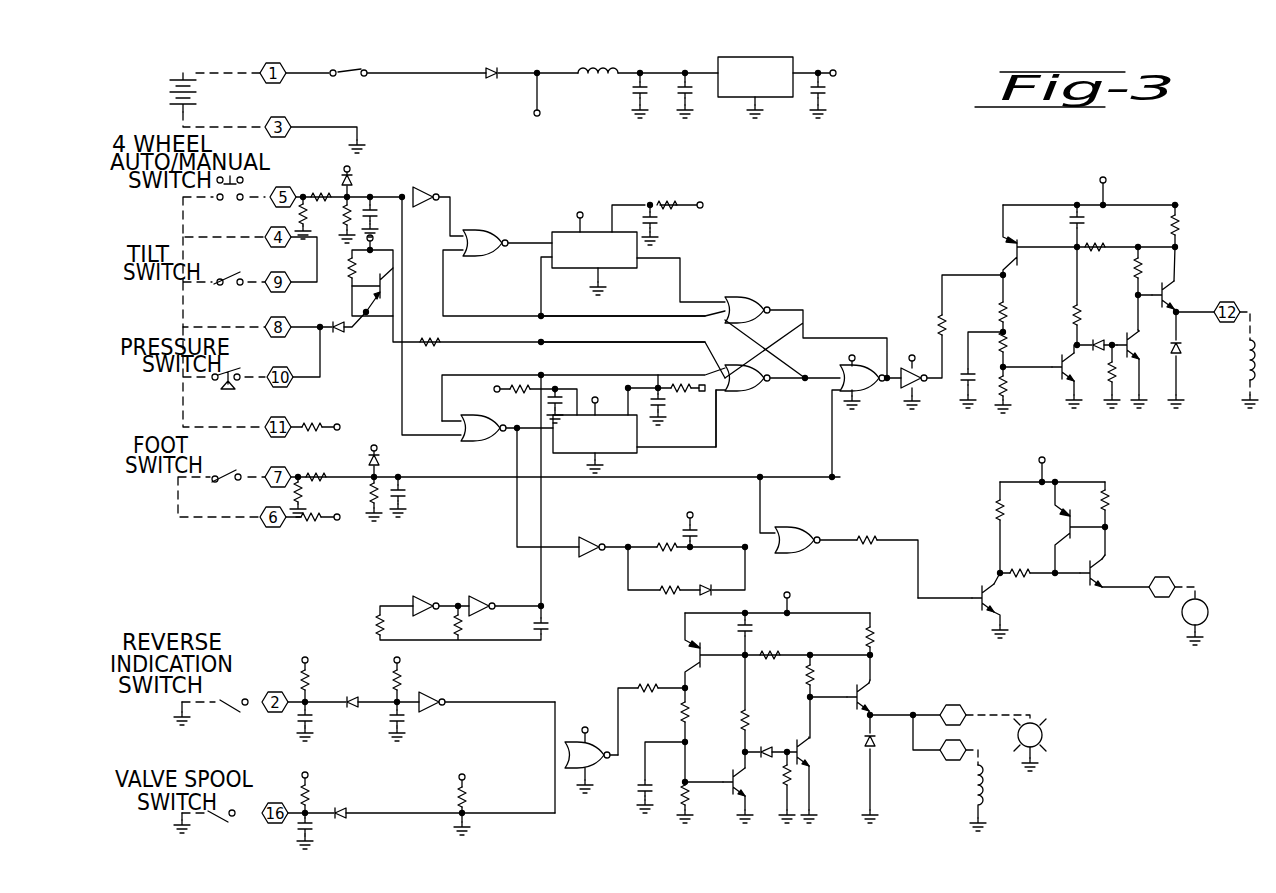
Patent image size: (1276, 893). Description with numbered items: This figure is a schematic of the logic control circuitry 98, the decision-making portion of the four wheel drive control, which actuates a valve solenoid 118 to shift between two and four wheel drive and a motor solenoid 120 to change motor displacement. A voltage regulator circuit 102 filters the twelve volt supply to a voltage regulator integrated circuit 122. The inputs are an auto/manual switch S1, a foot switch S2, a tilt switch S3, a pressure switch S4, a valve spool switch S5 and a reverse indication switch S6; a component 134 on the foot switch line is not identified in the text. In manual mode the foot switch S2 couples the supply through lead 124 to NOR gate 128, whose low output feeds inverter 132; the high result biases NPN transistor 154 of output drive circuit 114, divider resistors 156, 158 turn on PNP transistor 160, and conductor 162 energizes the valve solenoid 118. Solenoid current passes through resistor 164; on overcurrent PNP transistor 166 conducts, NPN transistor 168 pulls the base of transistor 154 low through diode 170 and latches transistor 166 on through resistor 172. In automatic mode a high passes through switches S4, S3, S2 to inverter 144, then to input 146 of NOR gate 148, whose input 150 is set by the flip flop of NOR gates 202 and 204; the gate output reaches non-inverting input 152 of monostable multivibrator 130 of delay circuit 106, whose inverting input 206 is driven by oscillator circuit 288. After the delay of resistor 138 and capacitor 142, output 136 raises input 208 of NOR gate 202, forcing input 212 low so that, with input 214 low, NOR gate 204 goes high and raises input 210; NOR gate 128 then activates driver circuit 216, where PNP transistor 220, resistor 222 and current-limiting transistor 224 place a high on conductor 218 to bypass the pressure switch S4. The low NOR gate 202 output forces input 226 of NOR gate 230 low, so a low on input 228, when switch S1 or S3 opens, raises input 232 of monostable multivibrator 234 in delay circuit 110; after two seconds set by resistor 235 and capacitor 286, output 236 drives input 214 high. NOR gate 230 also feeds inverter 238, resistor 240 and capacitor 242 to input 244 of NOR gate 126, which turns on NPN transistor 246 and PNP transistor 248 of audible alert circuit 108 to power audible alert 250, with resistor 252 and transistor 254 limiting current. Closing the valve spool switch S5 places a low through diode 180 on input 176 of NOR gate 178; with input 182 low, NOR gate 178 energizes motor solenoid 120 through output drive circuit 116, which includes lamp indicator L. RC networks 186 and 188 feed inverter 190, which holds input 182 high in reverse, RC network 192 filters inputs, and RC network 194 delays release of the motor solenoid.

The logic control circuitry 98 is at (121, 94).
The voltage regulator circuit 102 is at (735, 134).
The pressure delay two-to-four wheel shift circuit 106 is at (647, 296).
The audible alert circuit 108 is at (972, 508).
The delay four-to-two wheel shift circuit 110 is at (715, 472).
The output drive circuit 114 is at (958, 244).
The output drive circuit 116 is at (653, 648).
The valve solenoid 118 is at (1248, 352).
The motor solenoid 120 is at (1002, 790).
The voltage regulator integrated circuit 122 is at (795, 62).
The lead 124 is at (450, 480).
The NOR gate 126 is at (790, 527).
The NOR gate 128 is at (868, 392).
The monostable multivibrator 130 is at (572, 232).
The inverter 132 is at (940, 345).
The protection diode 134 is at (374, 490).
The output of monostable multivibrator 136 is at (676, 258).
The resistor 138 is at (688, 210).
The capacitor 142 is at (668, 233).
The inverter 144 is at (412, 190).
The input of NOR gate 148 146 is at (463, 230).
The NOR gate 148 is at (488, 232).
The input of NOR gate 148 150 is at (472, 255).
The non-inverting input of monostable multivibrator 152 is at (553, 238).
The NPN transistor 154 is at (1118, 375).
The resistor 156 is at (1133, 342).
The resistor 158 is at (1134, 276).
The PNP transistor 160 is at (1178, 288).
The conductor 162 is at (1196, 307).
The resistor 164 is at (1183, 222).
The PNP transistor 166 is at (1012, 244).
The NPN transistor 168 is at (1062, 385).
The diode 170 is at (1092, 382).
The resistor 172 is at (1072, 312).
The input of NOR gate 178 176 is at (565, 762).
The NOR gate 178 is at (592, 772).
The diode 180 is at (350, 810).
The input of NOR gate 178 182 is at (565, 750).
The RC network 186 is at (300, 712).
The RC network 188 is at (398, 712).
The inverter 190 is at (440, 697).
The RC network 192 is at (312, 797).
The RC network 194 is at (460, 812).
The NOR gate 202 is at (770, 295).
The NOR gate 204 is at (760, 390).
The inverting input of monostable multivibrator 206 is at (546, 258).
The input of NOR gate 202 208 is at (730, 297).
The input of NOR gate 202 210 is at (623, 324).
The input of NOR gate 204 212 is at (705, 375).
The input of NOR gate 204 214 is at (720, 400).
The driver circuit 216 is at (357, 296).
The conductor 218 is at (322, 374).
The PNP transistor 220 is at (360, 312).
The resistor 222 is at (350, 268).
The transistor 224 is at (390, 290).
The input of NOR gate 230 226 is at (466, 415).
The input of NOR gate 230 228 is at (460, 438).
The NOR gate 230 is at (494, 440).
The input of monostable multivibrator 234 232 is at (550, 426).
The monostable multivibrator 234 is at (578, 455).
The resistor 235 is at (655, 375).
The output of monostable multivibrator 234 236 is at (640, 446).
The inverter 238 is at (612, 542).
The resistor 240 is at (666, 542).
The capacitor 242 is at (710, 518).
The input of NOR gate 126 244 is at (785, 555).
The NPN transistor 246 is at (1005, 612).
The PNP transistor 248 is at (1105, 568).
The audible alert 250 is at (1200, 582).
The resistor 252 is at (1110, 500).
The transistor 254 is at (1068, 495).
The capacitor 286 is at (655, 388).
The oscillator circuit 288 is at (475, 590).
The auto/manual switch S1 is at (245, 187).
The foot switch S2 is at (243, 470).
The tilt switch S3 is at (245, 275).
The pressure switch S4 is at (210, 388).
The valve spool switch S5 is at (225, 808).
The reverse indication switch S6 is at (240, 690).
The lamp indicator L is at (1045, 735).